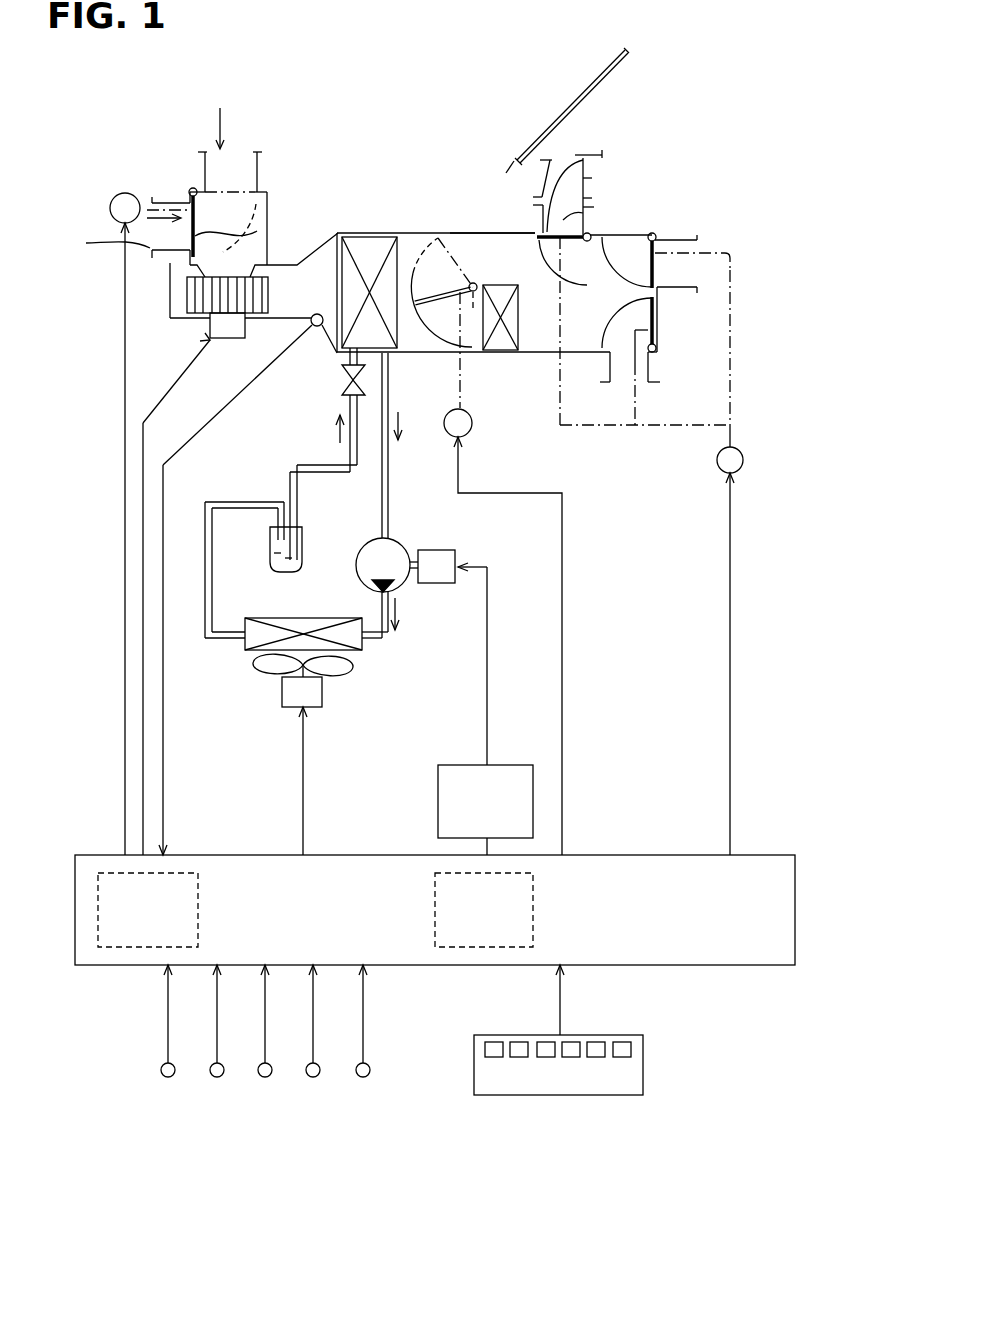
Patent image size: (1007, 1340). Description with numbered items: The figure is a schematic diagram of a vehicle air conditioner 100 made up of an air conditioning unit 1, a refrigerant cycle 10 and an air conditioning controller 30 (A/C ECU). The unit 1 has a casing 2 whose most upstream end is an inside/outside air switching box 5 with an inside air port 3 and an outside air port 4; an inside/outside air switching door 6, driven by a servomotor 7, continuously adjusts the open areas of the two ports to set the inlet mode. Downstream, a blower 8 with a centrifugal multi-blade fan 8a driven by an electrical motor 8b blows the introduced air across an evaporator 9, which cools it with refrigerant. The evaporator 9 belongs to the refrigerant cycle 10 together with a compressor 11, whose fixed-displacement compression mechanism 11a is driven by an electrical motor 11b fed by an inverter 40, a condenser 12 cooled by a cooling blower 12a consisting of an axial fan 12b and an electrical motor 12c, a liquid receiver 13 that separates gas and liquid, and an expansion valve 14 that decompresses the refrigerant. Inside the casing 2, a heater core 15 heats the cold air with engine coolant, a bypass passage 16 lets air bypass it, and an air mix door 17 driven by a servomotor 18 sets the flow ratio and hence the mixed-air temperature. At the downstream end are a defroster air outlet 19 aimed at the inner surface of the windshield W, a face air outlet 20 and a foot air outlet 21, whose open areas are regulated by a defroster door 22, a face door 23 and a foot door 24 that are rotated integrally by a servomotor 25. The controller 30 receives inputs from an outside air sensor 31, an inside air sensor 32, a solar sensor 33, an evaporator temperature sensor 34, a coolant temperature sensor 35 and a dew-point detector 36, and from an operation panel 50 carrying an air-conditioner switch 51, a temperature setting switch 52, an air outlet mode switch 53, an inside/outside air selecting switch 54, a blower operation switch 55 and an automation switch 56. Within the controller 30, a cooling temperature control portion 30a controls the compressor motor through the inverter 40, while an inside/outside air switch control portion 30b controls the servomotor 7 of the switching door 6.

The air conditioning unit 1 is at (440, 226).
The casing 2 is at (465, 232).
The inside air port 3 is at (152, 251).
The outside air port 4 is at (238, 150).
The inside/outside air switching box 5 is at (272, 193).
The inside/outside air switching door 6 is at (256, 233).
The servomotor 7 is at (125, 192).
The blower 8 is at (156, 297).
The centrifugal multi-blade fan 8a is at (188, 302).
The electrical motor 8b is at (226, 340).
The evaporator 9 is at (366, 252).
The refrigerant cycle 10 is at (276, 489).
The compressor 11 is at (404, 594).
The fixed-displacement compression mechanism 11a is at (396, 542).
The electrical motor 11b is at (447, 585).
The condenser 12 is at (270, 618).
The cooling blower 12a is at (253, 683).
The axial fan 12b is at (253, 666).
The electrical motor 12c is at (282, 690).
The liquid receiver 13 is at (270, 541).
The expansion valve 14 is at (341, 380).
The heater core 15 is at (519, 322).
The bypass passage 16 is at (500, 257).
The air mix door 17 is at (438, 307).
The servomotor 18 is at (472, 423).
The defroster air outlet 19 is at (585, 213).
The face air outlet 20 is at (678, 282).
The foot air outlet 21 is at (623, 372).
The defroster door 22 is at (585, 162).
The face door 23 is at (660, 262).
The foot door 24 is at (660, 323).
The servomotor 25 is at (744, 460).
The air conditioning controller 30 is at (794, 855).
The cooling temperature control portion 30a is at (535, 903).
The inside/outside air switch control portion 30b is at (97, 895).
The outside air sensor 31 is at (168, 1077).
The inside air sensor 32 is at (217, 1077).
The solar sensor 33 is at (265, 1077).
The evaporator temperature sensor 34 is at (313, 1077).
The coolant temperature sensor 35 is at (363, 1077).
The dew-point detector 36 is at (317, 313).
The inverter 40 is at (438, 799).
The operation panel 50 is at (561, 1097).
The air-conditioner switch 51 is at (493, 1042).
The temperature setting switch 52 is at (517, 1042).
The air outlet mode switch 53 is at (545, 1042).
The inside/outside air selecting switch 54 is at (570, 1042).
The blower operation switch 55 is at (595, 1042).
The automation switch 56 is at (621, 1042).
The air conditioner 100 is at (715, 190).
The windshield W is at (568, 101).